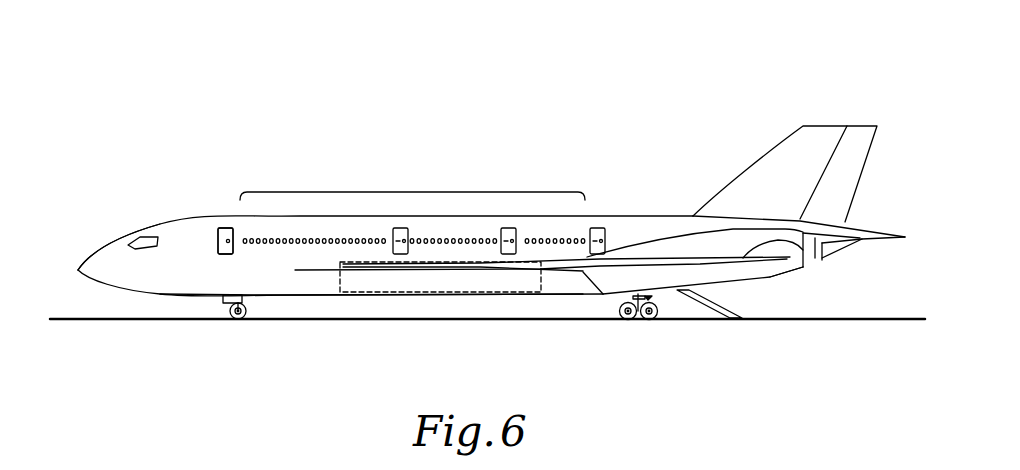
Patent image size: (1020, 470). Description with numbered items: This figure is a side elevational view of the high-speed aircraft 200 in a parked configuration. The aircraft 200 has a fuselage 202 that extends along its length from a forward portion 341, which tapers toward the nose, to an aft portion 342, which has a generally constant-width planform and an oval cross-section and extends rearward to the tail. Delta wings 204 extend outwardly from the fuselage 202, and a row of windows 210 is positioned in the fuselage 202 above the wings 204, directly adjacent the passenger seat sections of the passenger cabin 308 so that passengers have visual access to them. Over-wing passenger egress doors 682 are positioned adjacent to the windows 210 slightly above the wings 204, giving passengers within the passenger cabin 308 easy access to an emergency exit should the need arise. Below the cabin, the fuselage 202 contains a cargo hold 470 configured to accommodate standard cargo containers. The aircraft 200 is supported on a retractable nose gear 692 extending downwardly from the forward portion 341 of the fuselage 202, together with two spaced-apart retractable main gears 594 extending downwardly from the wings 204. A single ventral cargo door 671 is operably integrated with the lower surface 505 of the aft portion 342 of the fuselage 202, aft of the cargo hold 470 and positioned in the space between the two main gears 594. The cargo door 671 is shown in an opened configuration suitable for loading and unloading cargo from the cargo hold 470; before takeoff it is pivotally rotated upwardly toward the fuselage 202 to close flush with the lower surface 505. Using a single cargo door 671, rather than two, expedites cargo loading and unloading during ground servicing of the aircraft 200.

The high-speed aircraft 200 is at (277, 90).
The fuselage 202 is at (93, 258).
The delta wings 204 is at (803, 257).
The windows 210 is at (416, 192).
The passenger cabin 308 is at (250, 254).
The forward portion 341 is at (206, 176).
The aft portion 342 is at (673, 140).
The cargo hold 470 is at (402, 292).
The lower surface 505 is at (317, 295).
The main gears 594 is at (619, 315).
The ventral cargo door 671 is at (706, 318).
The over-wing passenger egress doors 682 is at (405, 228).
The nose gear 692 is at (229, 312).